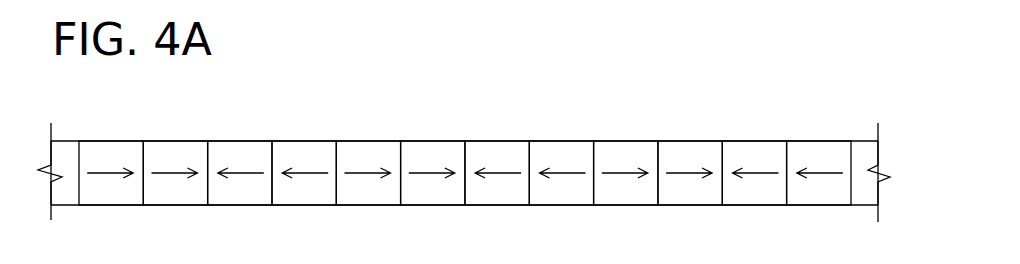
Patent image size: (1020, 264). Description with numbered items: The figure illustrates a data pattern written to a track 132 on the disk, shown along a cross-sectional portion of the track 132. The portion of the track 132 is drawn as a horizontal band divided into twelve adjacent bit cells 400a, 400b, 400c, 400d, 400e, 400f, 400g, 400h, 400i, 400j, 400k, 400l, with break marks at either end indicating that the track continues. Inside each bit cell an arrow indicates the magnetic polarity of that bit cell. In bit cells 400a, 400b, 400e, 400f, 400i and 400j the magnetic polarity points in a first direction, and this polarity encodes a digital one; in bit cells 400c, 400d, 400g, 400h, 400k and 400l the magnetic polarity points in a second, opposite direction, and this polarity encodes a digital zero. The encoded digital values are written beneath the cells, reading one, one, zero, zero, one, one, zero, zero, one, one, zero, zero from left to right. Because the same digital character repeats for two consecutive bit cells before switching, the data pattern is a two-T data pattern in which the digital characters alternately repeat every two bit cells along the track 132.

The track 132 is at (845, 138).
The bit cell 400a is at (110, 141).
The bit cell 400b is at (167, 141).
The bit cell 400c is at (240, 141).
The bit cell 400d is at (295, 141).
The bit cell 400e is at (371, 141).
The bit cell 400f is at (425, 141).
The bit cell 400g is at (498, 141).
The bit cell 400h is at (552, 141).
The bit cell 400i is at (625, 141).
The bit cell 400j is at (680, 141).
The bit cell 400k is at (755, 141).
The bit cell 400l is at (812, 141).